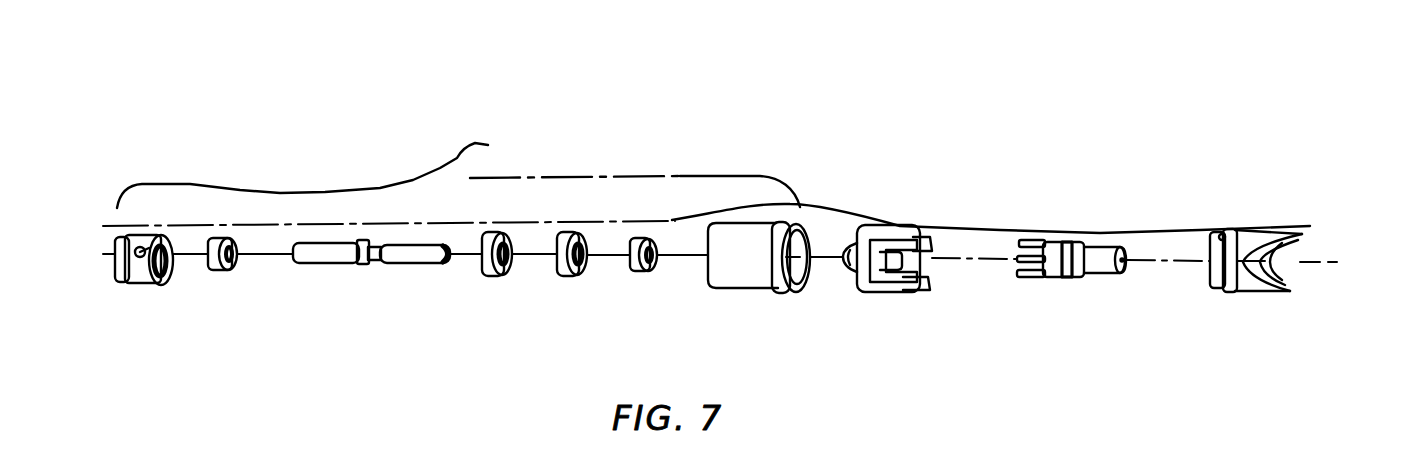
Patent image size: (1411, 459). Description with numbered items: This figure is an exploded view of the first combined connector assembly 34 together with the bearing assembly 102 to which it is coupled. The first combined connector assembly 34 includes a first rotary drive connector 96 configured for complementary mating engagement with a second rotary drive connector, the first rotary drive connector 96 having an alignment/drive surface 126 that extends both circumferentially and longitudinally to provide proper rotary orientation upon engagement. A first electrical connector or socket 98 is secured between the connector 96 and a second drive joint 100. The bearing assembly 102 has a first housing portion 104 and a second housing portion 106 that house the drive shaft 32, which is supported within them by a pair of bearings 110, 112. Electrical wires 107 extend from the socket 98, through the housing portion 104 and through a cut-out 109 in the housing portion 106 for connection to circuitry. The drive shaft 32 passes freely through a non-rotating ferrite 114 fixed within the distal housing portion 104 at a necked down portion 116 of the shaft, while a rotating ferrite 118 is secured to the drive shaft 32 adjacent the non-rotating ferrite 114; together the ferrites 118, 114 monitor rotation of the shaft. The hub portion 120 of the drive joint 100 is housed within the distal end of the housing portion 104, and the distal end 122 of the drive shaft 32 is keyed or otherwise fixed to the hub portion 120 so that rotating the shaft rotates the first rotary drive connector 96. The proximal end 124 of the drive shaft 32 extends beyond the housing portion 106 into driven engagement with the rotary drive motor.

The first combined connector assembly 34 is at (1040, 60).
The bearing assembly 102 is at (713, 182).
The second housing portion 106 is at (140, 284).
The cut-out 109 is at (139, 250).
The bearing 112 is at (219, 268).
The proximal end of drive shaft 124 is at (302, 264).
The necked down portion 116 is at (362, 266).
The drive shaft 32 is at (430, 266).
The distal end of drive shaft 122 is at (440, 263).
The non-rotating ferrite 114 is at (493, 275).
The rotating ferrite 118 is at (568, 276).
The bearing 110 is at (647, 272).
The first housing portion 104 is at (735, 282).
The hub portion 120 is at (845, 278).
The second drive joint 100 is at (903, 292).
The first electrical connector or socket 98 is at (1077, 240).
The electrical wires 107 is at (962, 310).
The first rotary drive connector 96 is at (1255, 226).
The alignment/drive surface 126 is at (1280, 277).